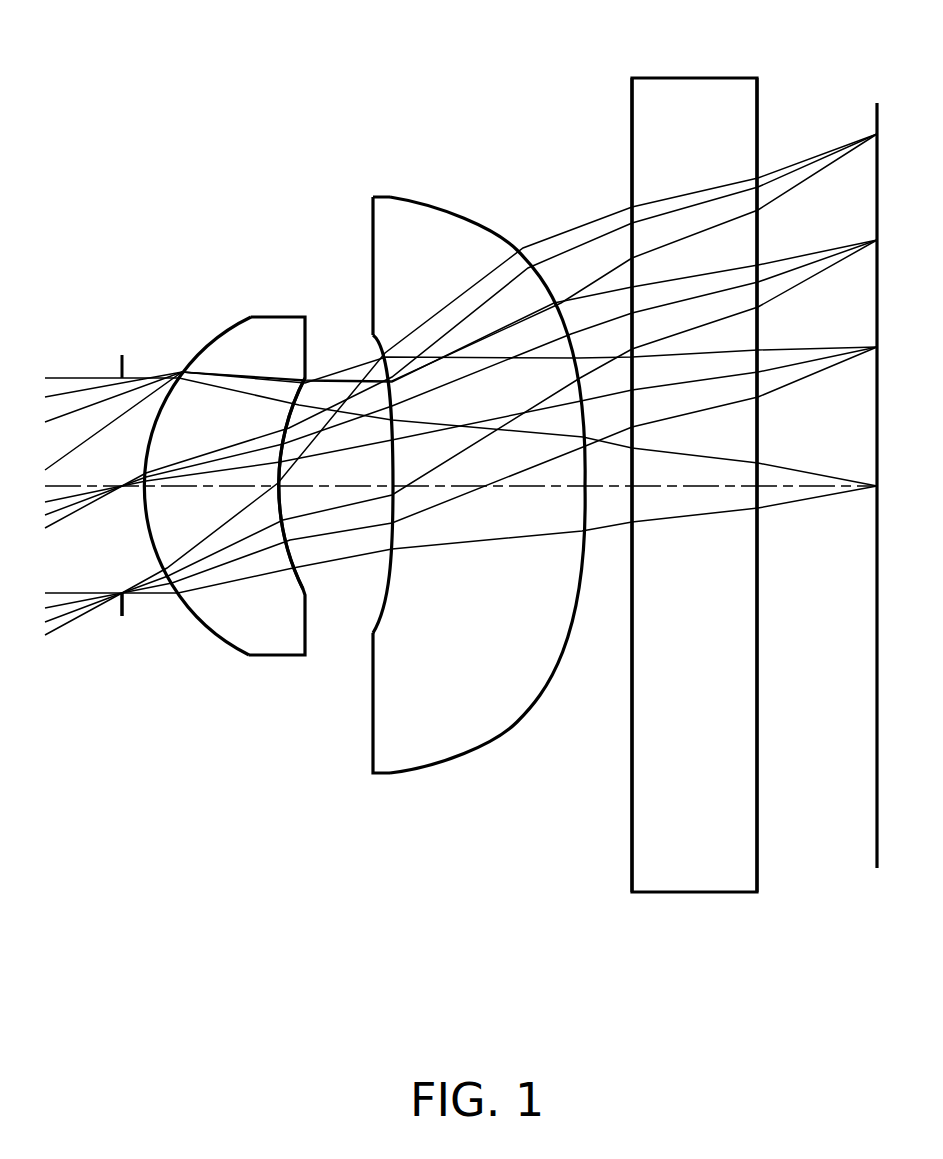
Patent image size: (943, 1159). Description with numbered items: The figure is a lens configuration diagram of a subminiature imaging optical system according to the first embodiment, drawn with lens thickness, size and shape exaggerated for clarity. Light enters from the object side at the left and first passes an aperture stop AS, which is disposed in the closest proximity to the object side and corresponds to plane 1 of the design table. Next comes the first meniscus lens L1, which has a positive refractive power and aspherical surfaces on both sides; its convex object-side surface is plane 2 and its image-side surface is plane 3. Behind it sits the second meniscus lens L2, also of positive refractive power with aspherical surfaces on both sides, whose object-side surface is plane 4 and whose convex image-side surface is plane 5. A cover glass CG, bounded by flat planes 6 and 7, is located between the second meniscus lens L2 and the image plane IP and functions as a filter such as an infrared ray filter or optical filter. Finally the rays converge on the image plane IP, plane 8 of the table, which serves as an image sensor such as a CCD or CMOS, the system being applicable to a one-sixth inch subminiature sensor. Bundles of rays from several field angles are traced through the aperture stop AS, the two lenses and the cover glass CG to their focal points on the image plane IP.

The aperture stop plane 1 is at (121, 355).
The first lens object-side surface 2 is at (212, 338).
The first lens image-side surface 3 is at (305, 317).
The second lens object-side surface 4 is at (372, 236).
The second lens image-side surface 5 is at (482, 216).
The cover glass object-side plane 6 is at (631, 118).
The cover glass image-side plane 7 is at (761, 105).
The image plane 8 is at (876, 100).
The aperture stop AS is at (122, 616).
The first meniscus lens L1 is at (228, 493).
The second meniscus lens L2 is at (461, 507).
The cover glass CG is at (683, 494).
The image plane IP is at (863, 490).